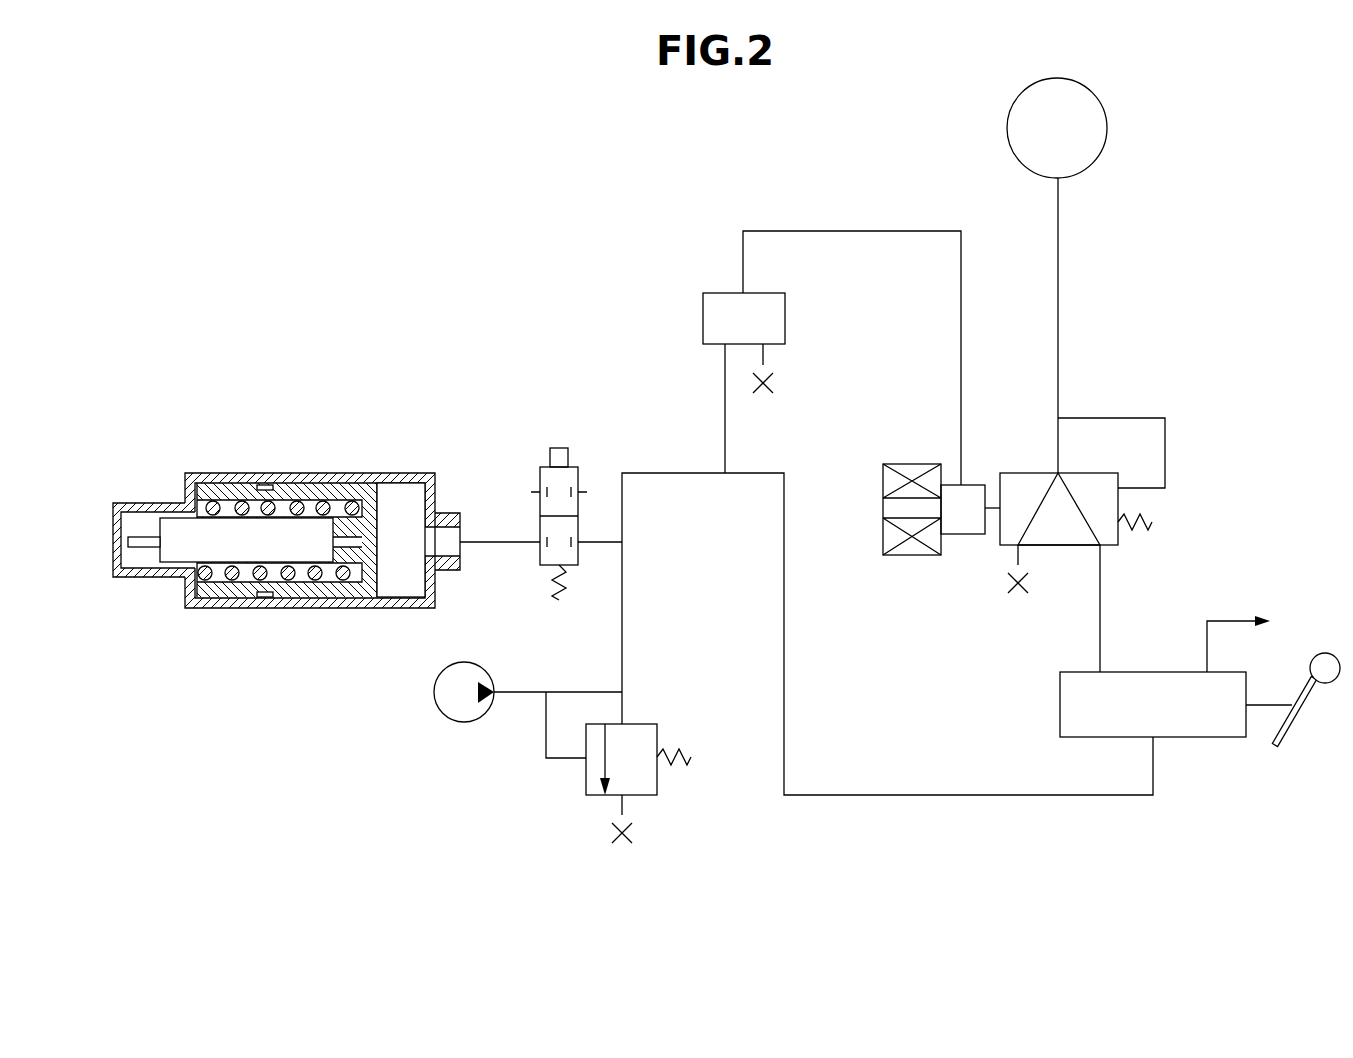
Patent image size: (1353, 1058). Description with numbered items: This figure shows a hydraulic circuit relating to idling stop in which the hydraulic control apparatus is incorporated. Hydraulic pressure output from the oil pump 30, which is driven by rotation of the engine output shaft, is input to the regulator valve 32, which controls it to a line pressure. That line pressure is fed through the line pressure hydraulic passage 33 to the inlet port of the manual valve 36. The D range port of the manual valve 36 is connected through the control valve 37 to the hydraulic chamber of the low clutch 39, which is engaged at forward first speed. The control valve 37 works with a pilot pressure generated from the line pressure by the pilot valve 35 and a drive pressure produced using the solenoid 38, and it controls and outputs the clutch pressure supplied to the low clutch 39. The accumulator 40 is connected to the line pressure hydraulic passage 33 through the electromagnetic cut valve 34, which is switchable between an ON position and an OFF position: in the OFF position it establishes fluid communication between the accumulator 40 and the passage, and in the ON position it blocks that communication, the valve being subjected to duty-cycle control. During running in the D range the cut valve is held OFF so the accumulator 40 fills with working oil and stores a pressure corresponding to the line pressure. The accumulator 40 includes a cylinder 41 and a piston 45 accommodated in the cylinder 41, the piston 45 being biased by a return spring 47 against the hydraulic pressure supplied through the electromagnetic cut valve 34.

The oil pump 30 is at (464, 722).
The regulator valve 32 is at (645, 724).
The line pressure hydraulic passage 33 is at (622, 628).
The electromagnetic cut valve 34 is at (580, 473).
The pilot valve 35 is at (703, 322).
The manual valve 36 is at (1060, 706).
The control valve 37 is at (1018, 473).
The solenoid 38 is at (908, 464).
The low clutch 39 is at (1007, 130).
The accumulator 40 is at (318, 466).
The cylinder 41 is at (385, 607).
The piston 45 is at (380, 523).
The return spring 47 is at (330, 582).